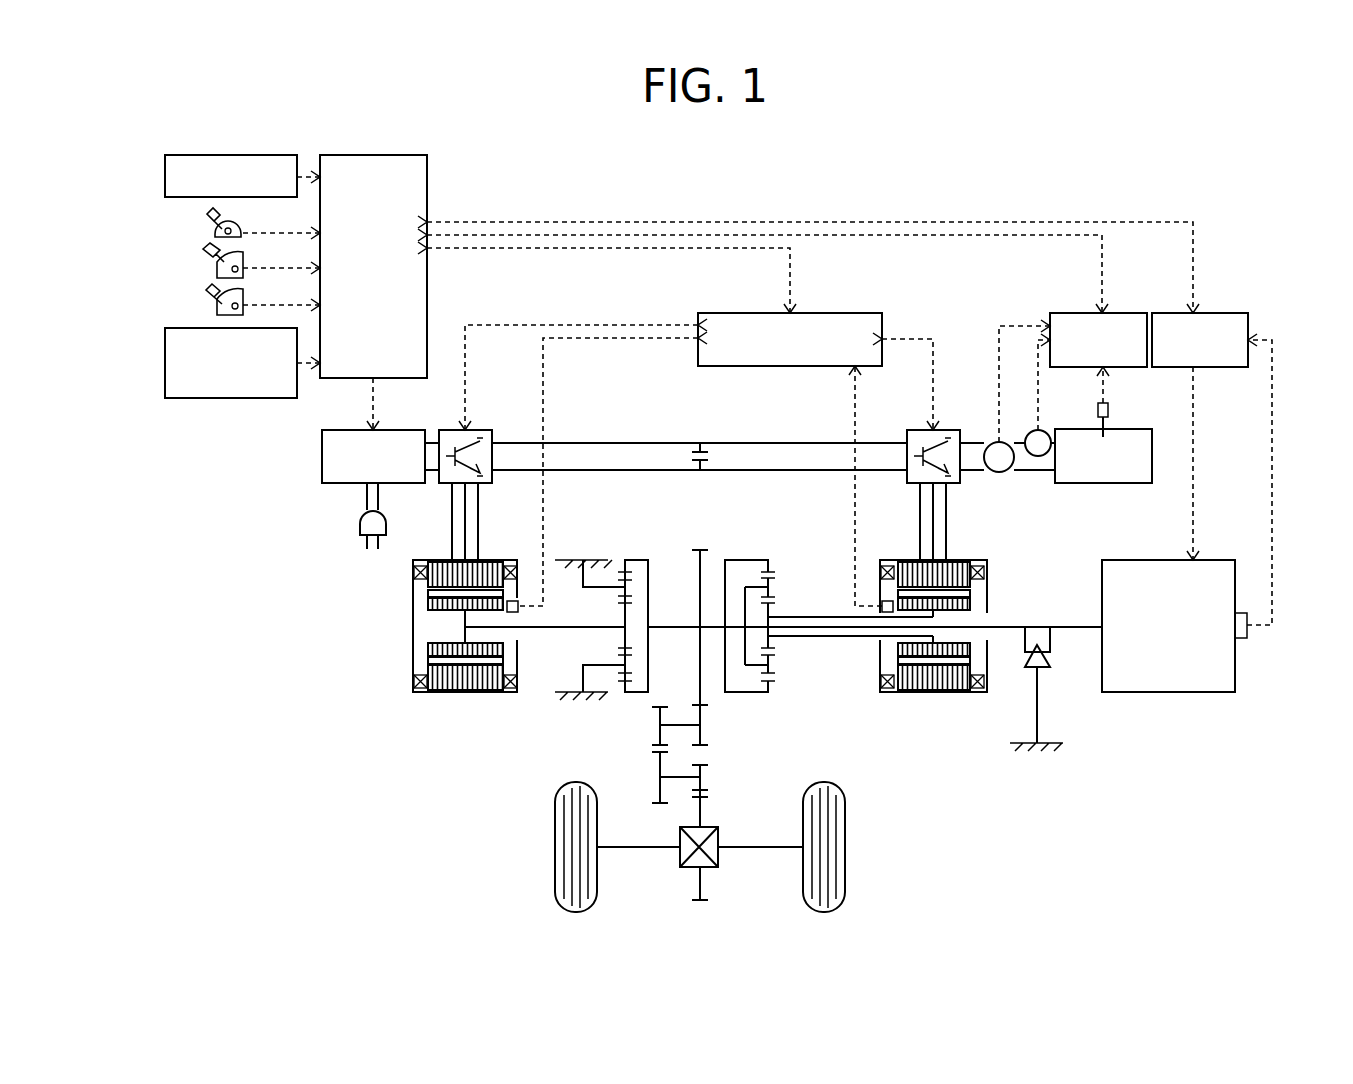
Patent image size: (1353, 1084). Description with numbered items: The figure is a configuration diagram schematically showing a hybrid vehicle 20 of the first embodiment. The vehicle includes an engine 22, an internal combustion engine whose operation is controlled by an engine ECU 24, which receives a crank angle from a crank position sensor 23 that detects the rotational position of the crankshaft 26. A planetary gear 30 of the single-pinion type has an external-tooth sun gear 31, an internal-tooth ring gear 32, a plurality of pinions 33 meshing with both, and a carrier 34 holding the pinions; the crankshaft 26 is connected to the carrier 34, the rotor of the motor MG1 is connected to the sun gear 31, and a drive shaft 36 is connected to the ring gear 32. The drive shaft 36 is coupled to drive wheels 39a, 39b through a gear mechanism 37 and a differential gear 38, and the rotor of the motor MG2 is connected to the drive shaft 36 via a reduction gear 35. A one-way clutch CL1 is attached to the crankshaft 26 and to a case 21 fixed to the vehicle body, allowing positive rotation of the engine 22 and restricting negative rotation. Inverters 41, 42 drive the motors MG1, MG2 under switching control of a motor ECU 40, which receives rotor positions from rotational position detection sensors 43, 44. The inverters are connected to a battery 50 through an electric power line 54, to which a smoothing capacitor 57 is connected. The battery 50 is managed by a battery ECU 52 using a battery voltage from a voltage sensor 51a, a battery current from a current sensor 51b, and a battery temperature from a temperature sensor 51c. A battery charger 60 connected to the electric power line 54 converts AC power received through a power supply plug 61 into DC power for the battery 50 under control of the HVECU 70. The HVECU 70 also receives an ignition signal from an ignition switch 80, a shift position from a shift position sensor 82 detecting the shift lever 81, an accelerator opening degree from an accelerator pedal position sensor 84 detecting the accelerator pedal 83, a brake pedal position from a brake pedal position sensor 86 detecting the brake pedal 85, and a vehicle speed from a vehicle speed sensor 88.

The hybrid vehicle 20 is at (934, 183).
The case 21 is at (1056, 745).
The engine 22 is at (1168, 560).
The crank position sensor 23 is at (1240, 638).
The engine ECU 24 is at (1218, 313).
The crankshaft 26 is at (1062, 627).
The one-way clutch CL1 is at (1046, 664).
The planetary gear 30 is at (769, 560).
The sun gear 31 is at (772, 651).
The ring gear 32 is at (772, 683).
The pinions 33 is at (772, 667).
The carrier 34 is at (747, 612).
The reduction gear 35 is at (638, 560).
The drive shaft 36 is at (667, 625).
The gear mechanism 37 is at (712, 735).
The differential gear 38 is at (680, 838).
The drive wheel 39a is at (555, 847).
The drive wheel 39b is at (845, 847).
The motor MG1 is at (925, 692).
The motor MG2 is at (470, 692).
The motor ECU 40 is at (833, 313).
The inverter 41 is at (937, 430).
The inverter 42 is at (471, 430).
The rotational position detection sensor 43 is at (887, 600).
The rotational position detection sensor 44 is at (512, 600).
The battery 50 is at (1103, 483).
The voltage sensor 51a is at (995, 473).
The current sensor 51b is at (1038, 457).
The temperature sensor 51c is at (1108, 410).
The battery ECU 52 is at (1125, 313).
The electric power line 54 is at (771, 470).
The smoothing capacitor 57 is at (702, 449).
The battery charger 60 is at (322, 452).
The power supply plug 61 is at (360, 527).
The HVECU 70 is at (373, 155).
The ignition switch 80 is at (165, 177).
The shift lever 81 is at (211, 227).
The shift position sensor 82 is at (214, 234).
The accelerator pedal 83 is at (214, 258).
The accelerator pedal position sensor 84 is at (217, 272).
The brake pedal 85 is at (212, 299).
The brake pedal position sensor 86 is at (217, 311).
The vehicle speed sensor 88 is at (165, 360).